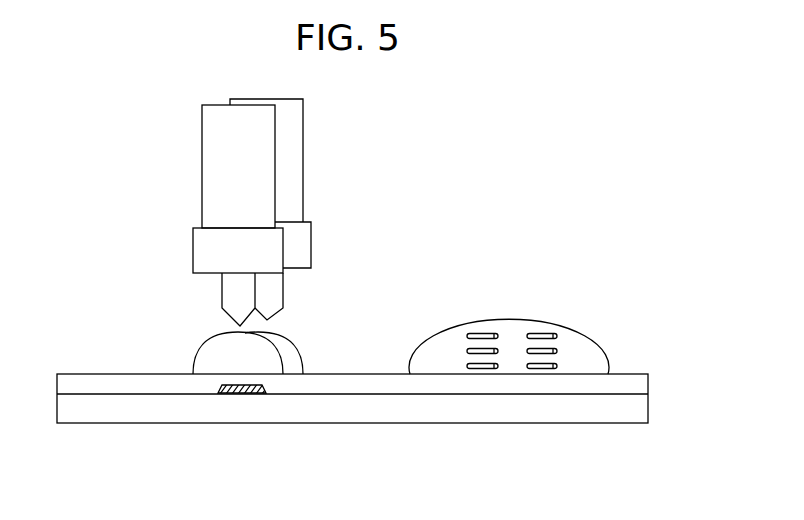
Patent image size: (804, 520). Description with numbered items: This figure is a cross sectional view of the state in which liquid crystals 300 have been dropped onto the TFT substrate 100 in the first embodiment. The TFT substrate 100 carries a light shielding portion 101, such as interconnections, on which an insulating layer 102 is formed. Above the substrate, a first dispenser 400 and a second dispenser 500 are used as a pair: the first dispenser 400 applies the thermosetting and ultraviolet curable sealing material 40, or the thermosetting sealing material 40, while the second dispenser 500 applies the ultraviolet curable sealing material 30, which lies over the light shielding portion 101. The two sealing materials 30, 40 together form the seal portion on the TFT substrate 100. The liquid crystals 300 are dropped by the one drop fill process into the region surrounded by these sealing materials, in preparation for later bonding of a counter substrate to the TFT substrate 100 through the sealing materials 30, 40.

The first dispenser 400 is at (232, 190).
The second dispenser 500 is at (293, 193).
The thermosetting and ultraviolet curable sealing material 40 is at (215, 358).
The ultraviolet curable sealing material 30 is at (293, 354).
The TFT substrate 100 is at (78, 413).
The insulating layer 102 is at (78, 384).
The light shielding portion 101 is at (225, 394).
The liquid crystals 300 is at (443, 362).